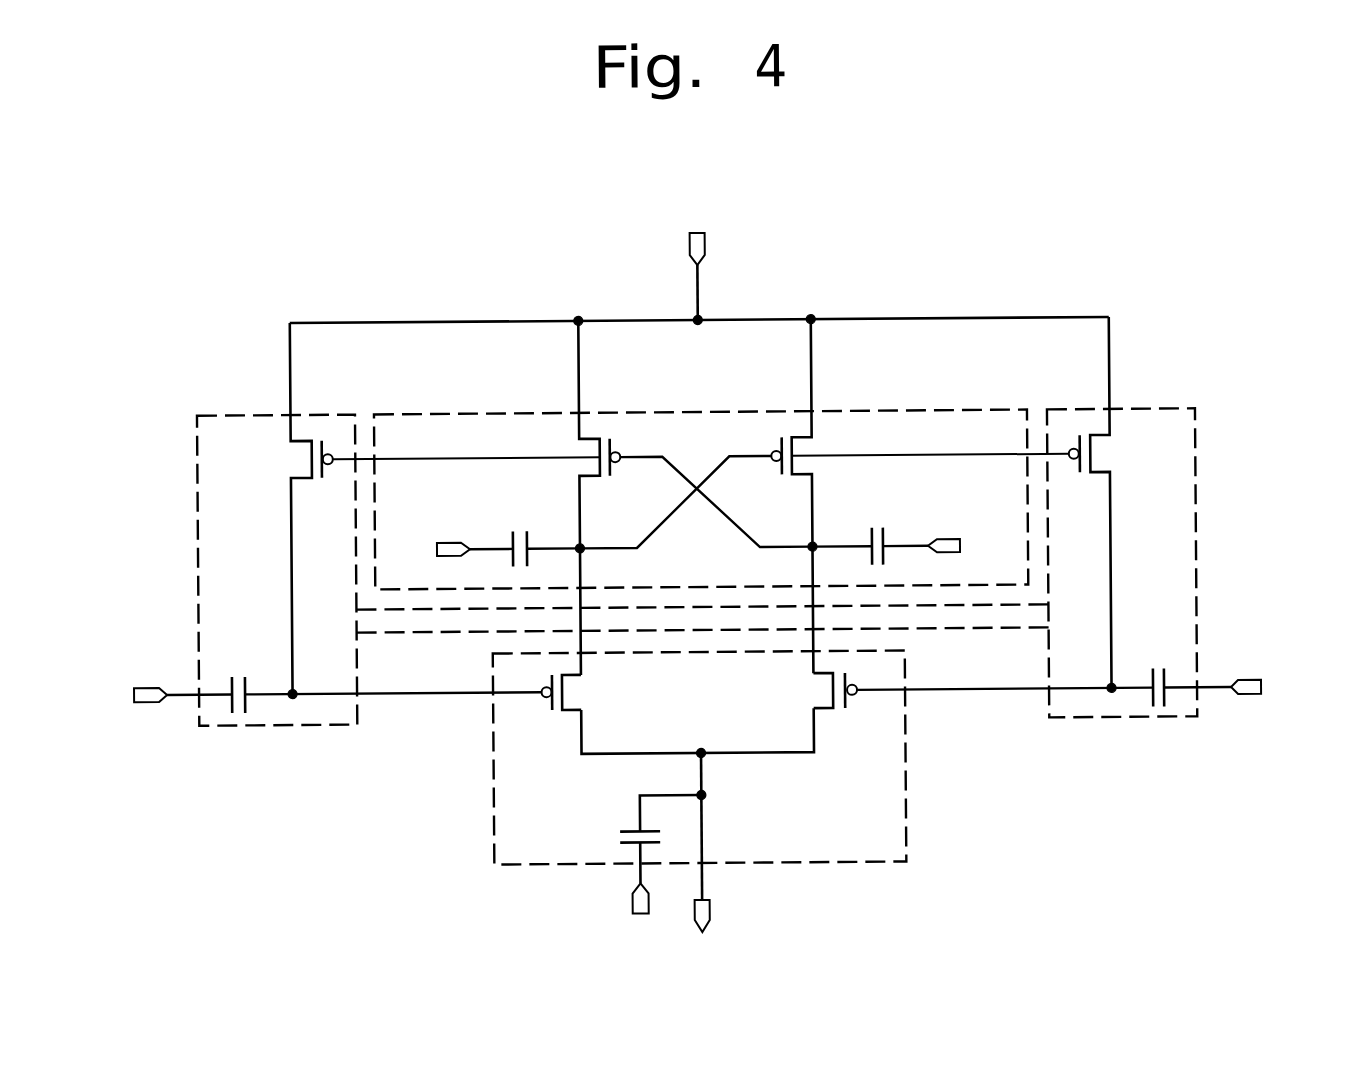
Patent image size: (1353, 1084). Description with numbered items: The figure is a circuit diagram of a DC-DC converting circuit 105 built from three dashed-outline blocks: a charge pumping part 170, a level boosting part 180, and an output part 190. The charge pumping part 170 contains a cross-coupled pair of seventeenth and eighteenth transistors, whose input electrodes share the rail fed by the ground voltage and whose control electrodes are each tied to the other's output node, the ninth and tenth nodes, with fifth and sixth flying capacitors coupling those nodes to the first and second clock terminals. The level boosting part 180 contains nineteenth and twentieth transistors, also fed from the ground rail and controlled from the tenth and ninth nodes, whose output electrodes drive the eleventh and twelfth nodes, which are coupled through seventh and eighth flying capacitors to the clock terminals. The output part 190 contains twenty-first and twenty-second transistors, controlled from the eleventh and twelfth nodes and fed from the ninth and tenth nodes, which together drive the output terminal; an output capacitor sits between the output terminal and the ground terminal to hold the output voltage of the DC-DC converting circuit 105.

The DC-DC converting circuit 105 is at (1059, 205).
The charge pumping part 170 is at (990, 412).
The level boosting part 180 is at (1156, 413).
The output part 190 is at (905, 829).